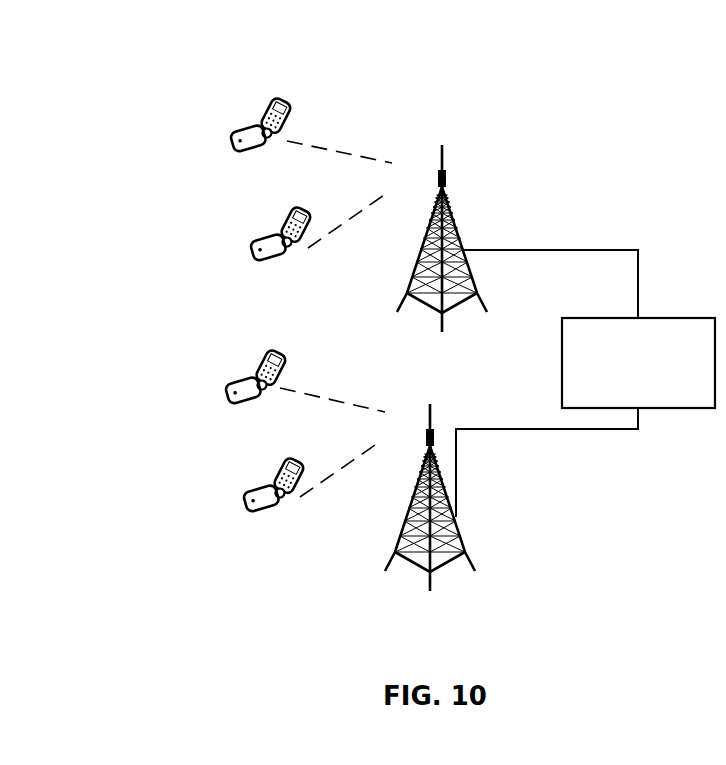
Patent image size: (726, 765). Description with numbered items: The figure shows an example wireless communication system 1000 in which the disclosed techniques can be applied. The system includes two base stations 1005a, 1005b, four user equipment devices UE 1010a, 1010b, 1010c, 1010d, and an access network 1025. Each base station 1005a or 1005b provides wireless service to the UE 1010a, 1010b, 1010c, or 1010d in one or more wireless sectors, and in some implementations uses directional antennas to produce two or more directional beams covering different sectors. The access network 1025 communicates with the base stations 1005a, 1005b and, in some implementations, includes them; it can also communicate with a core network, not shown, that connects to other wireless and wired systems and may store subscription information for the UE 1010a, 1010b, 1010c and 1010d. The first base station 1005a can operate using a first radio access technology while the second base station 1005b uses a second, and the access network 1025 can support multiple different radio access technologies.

The wireless communication system 1000 is at (100, 52).
The first base station 1005a is at (452, 208).
The second base station 1005b is at (434, 436).
The UE 1010a is at (258, 105).
The UE 1010b is at (277, 212).
The UE 1010c is at (250, 354).
The UE 1010d is at (270, 461).
The access network 1025 is at (572, 317).